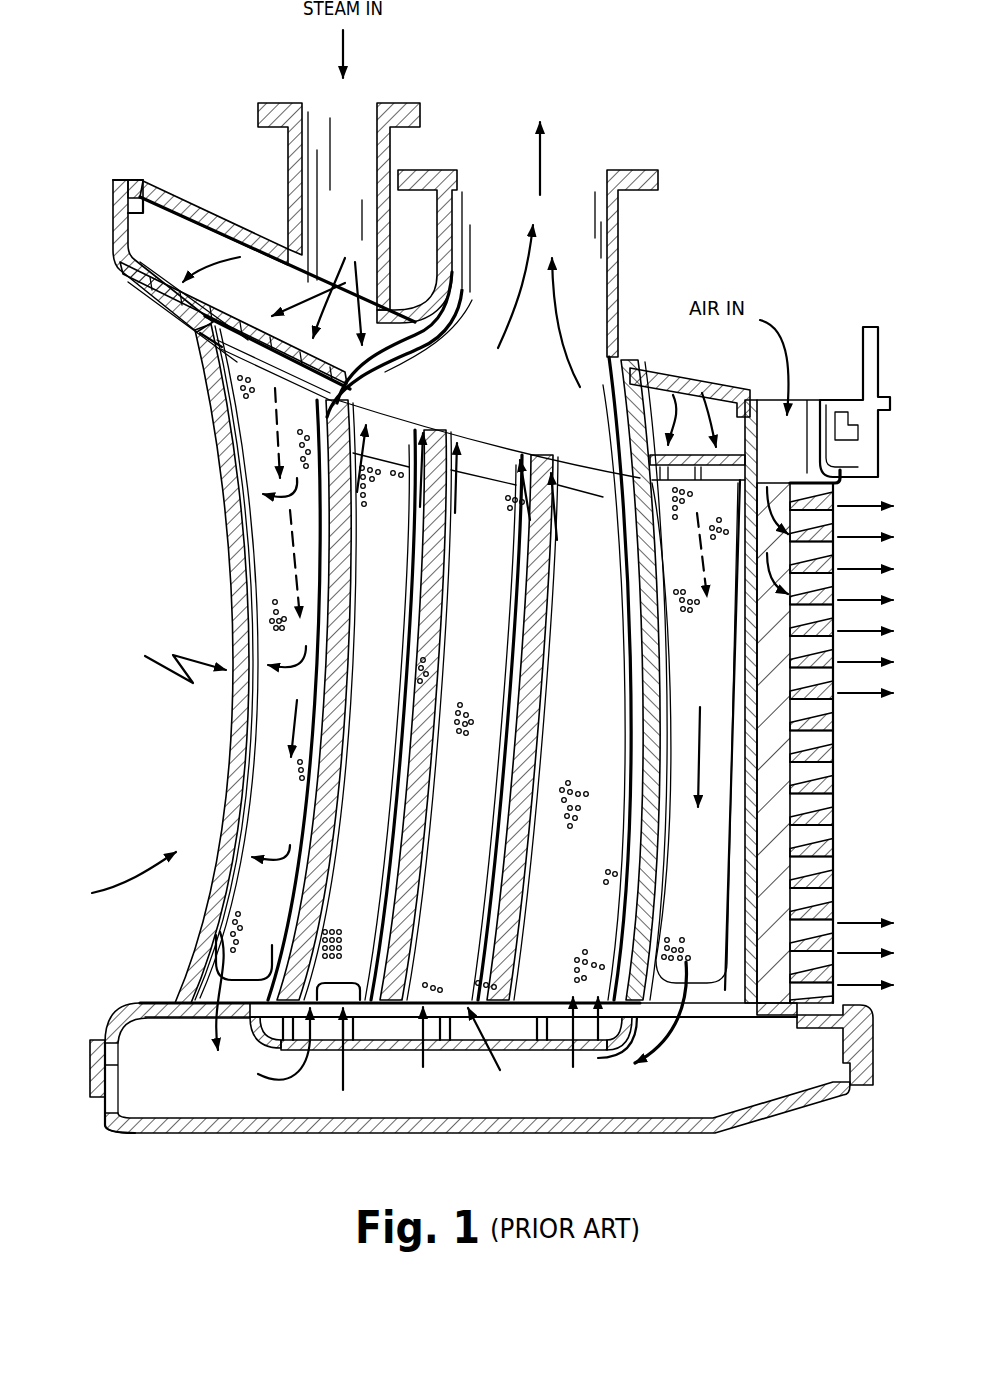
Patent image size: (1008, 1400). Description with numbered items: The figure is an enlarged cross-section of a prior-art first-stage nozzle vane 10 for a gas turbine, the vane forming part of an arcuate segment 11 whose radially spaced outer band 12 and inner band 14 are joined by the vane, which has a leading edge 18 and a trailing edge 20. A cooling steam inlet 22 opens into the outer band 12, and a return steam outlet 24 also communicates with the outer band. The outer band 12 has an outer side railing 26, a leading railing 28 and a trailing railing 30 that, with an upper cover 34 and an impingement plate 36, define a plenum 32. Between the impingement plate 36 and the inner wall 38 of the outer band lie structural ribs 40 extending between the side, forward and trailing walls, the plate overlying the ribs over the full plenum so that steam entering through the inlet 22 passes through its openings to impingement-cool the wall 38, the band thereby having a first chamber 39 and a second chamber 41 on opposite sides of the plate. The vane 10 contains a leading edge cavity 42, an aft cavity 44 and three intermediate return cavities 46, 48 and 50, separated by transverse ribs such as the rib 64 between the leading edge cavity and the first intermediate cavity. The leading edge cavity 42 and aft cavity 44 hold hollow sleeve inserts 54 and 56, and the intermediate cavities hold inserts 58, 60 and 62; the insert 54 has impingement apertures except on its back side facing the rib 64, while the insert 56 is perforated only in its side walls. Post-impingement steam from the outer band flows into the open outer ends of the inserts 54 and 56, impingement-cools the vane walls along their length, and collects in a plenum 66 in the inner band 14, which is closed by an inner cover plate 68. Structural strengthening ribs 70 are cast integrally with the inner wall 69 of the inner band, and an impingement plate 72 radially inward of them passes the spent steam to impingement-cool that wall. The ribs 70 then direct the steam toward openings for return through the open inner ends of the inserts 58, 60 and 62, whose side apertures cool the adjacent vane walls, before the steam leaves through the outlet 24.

The vane 10 is at (168, 664).
The arcuate segment 11 is at (118, 878).
The outer band 12 is at (135, 282).
The inner band 14 is at (140, 1003).
The leading edge 18 is at (240, 762).
The trailing edge 20 is at (835, 797).
The cooling steam inlet 22 is at (288, 177).
The return steam outlet 24 is at (620, 278).
The outer side railing 26 is at (136, 181).
The leading railing 28 is at (113, 225).
The trailing railing 30 is at (862, 375).
The plenum 32 is at (185, 252).
The upper cover 34 is at (162, 213).
The impingement plate 36 is at (210, 320).
The inner wall 38 is at (162, 320).
The first chamber 39 is at (150, 253).
The structural ribs 40 is at (222, 333).
The second chamber 41 is at (235, 418).
The leading edge cavity 42 is at (258, 543).
The aft cavity 44 is at (732, 990).
The intermediate return cavity 46 is at (410, 433).
The intermediate return cavity 48 is at (465, 450).
The intermediate return cavity 50 is at (558, 472).
The insert 54 is at (263, 457).
The insert sleeve 56 is at (682, 859).
The insert 58 is at (350, 842).
The insert 60 is at (468, 692).
The insert 62 is at (539, 934).
The rib 64 is at (355, 422).
The plenum 66 is at (140, 1062).
The inner cover plate 68 is at (188, 1135).
The inner wall 69 is at (175, 1000).
The structural strengthening ribs 70 is at (357, 1028).
The impingement plate 72 is at (462, 1043).